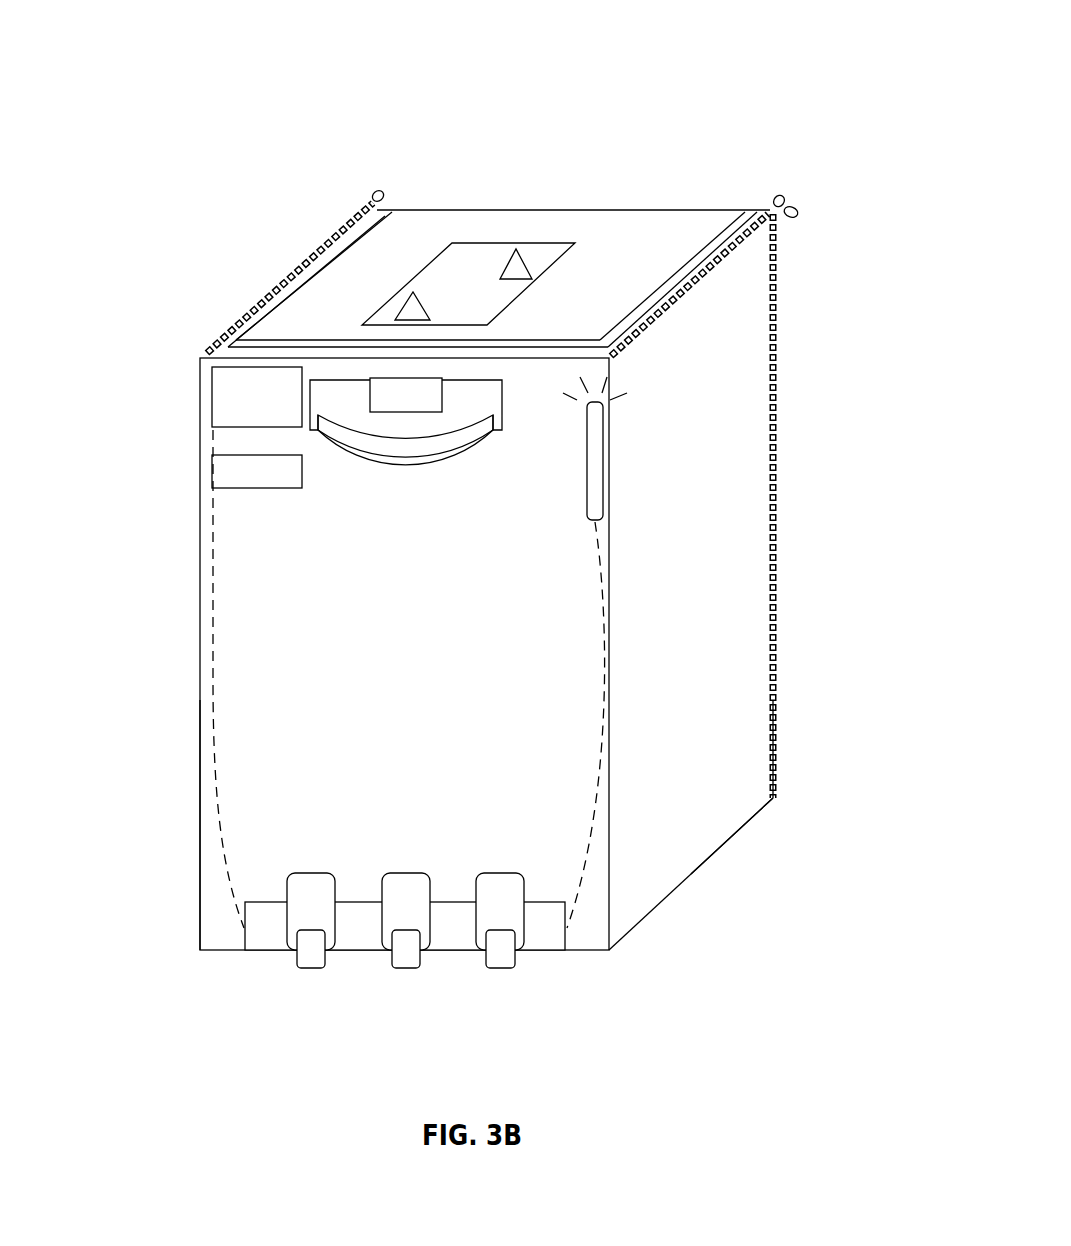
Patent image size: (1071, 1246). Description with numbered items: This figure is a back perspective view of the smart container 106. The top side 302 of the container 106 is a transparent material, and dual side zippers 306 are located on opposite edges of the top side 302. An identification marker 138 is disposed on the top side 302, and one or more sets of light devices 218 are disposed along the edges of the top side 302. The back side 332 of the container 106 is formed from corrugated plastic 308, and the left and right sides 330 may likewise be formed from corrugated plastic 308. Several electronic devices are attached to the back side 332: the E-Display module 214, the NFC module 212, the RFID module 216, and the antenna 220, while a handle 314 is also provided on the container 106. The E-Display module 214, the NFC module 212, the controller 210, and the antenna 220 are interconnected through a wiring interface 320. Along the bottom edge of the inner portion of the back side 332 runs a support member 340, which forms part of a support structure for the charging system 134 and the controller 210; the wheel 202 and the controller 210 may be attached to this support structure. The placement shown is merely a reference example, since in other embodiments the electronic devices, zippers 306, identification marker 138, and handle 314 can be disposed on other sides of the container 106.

The smart container 106 is at (535, 35).
The identification marker 138 is at (460, 238).
The top side 302 is at (598, 243).
The light devices 218 is at (737, 210).
The dual side zippers 306 is at (340, 235).
The RFID module 216 is at (385, 375).
The E-Display module 214 is at (205, 397).
The NFC module 212 is at (205, 470).
The back side 332 is at (268, 572).
The corrugated plastic 308 is at (262, 647).
The handle 314 is at (398, 478).
The antenna 220 is at (605, 450).
The sides 330 is at (735, 530).
The wiring interface 320 is at (597, 665).
The support member 340 is at (243, 938).
The controller 210 is at (272, 937).
The wheel 202 is at (307, 960).
The charging system 134 is at (387, 990).